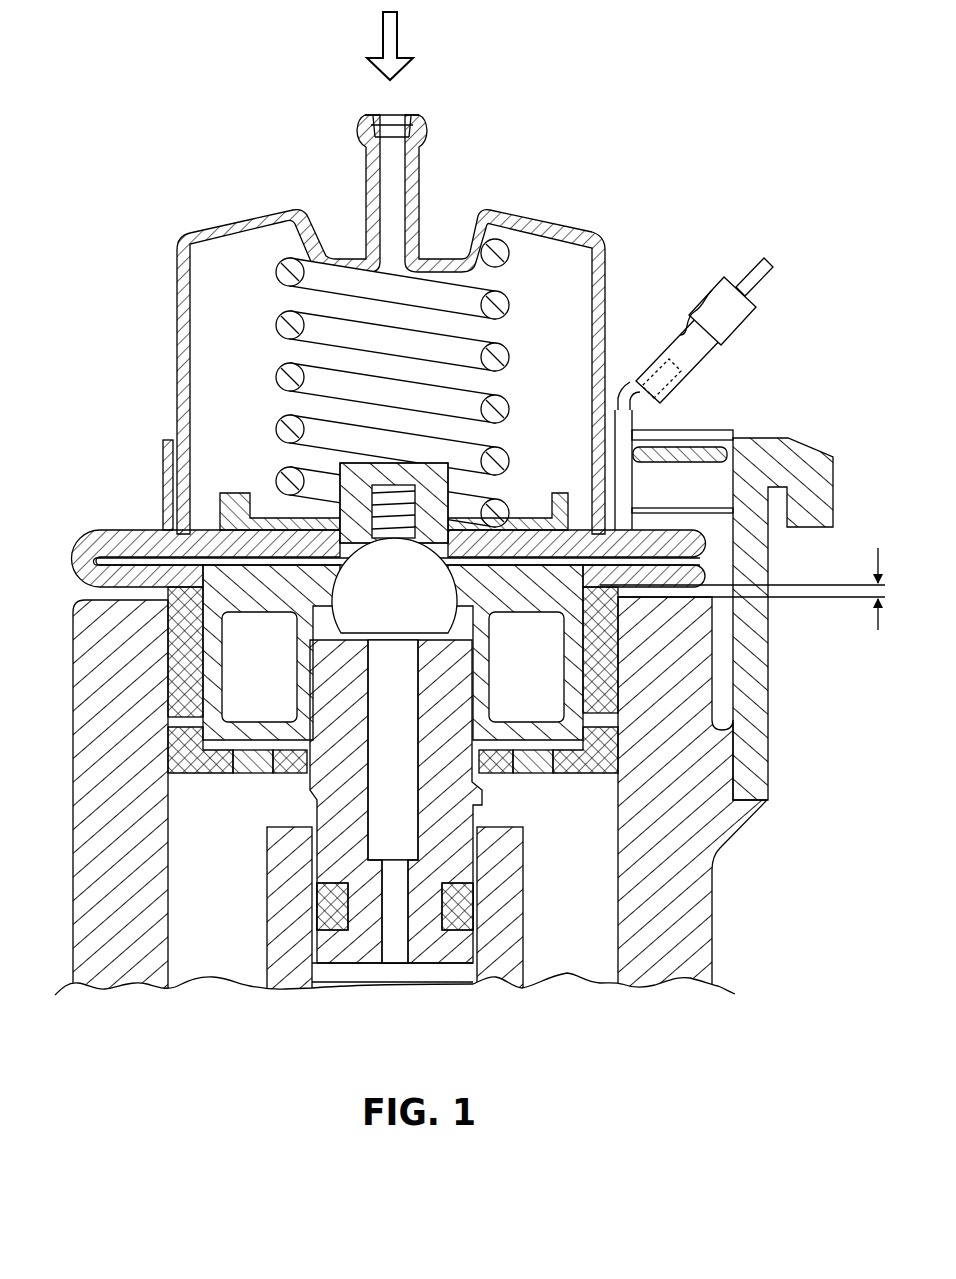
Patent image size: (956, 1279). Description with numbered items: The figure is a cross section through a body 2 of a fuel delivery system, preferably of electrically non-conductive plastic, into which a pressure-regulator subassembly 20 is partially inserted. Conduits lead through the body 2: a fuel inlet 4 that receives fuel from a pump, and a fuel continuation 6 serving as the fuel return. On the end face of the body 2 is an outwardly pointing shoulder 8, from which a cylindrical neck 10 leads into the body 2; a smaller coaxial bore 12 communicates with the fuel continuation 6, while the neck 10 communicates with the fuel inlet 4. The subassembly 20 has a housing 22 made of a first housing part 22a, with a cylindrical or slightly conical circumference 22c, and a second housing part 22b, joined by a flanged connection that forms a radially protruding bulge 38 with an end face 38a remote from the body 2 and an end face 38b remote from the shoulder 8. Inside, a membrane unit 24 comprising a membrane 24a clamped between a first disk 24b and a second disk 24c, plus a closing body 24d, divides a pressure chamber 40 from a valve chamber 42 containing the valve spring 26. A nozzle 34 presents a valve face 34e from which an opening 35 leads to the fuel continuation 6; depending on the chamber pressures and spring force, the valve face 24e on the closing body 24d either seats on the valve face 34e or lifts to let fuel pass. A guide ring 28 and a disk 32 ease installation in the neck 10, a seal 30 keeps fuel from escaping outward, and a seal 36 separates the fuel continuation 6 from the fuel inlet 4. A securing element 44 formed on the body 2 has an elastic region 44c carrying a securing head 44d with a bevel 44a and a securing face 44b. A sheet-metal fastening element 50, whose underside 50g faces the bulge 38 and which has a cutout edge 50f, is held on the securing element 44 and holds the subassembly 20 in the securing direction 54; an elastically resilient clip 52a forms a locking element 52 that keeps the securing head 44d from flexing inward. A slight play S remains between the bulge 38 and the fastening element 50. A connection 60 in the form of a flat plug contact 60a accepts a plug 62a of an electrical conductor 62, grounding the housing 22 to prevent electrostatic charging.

The body 2 is at (708, 915).
The fuel inlet 4 is at (567, 960).
The fuel continuation 6 is at (443, 973).
The shoulder 8 is at (73, 597).
The neck 10 is at (172, 805).
The bore 12 is at (315, 975).
The subassembly 20 is at (630, 213).
The housing 22 is at (617, 280).
The first housing part 22a is at (607, 257).
The second housing part 22b is at (222, 647).
The circumference 22c is at (607, 312).
The membrane unit 24 is at (349, 548).
The membrane 24a is at (130, 528).
The first disk 24b is at (232, 490).
The second disk 24c is at (487, 597).
The closing body 24d is at (295, 640).
The valve face 24e is at (380, 642).
The valve spring 26 is at (278, 316).
The guide ring 28 is at (168, 645).
The seal 30 is at (167, 693).
The disk 32 is at (168, 763).
The nozzle 34 is at (362, 846).
The valve face 34e is at (443, 640).
The opening 35 is at (407, 794).
The seal 36 is at (317, 907).
The bulge 38 is at (103, 527).
The end face 38a is at (137, 530).
The end face 38b is at (120, 593).
The pressure chamber 40 is at (513, 709).
The valve chamber 42 is at (569, 306).
The securing element 44 is at (780, 555).
The bevel 44a is at (787, 450).
The securing face 44b is at (790, 497).
The elastic region 44c is at (760, 680).
The securing head 44d is at (775, 453).
The fastening element 50 is at (716, 418).
The edge 50f is at (770, 530).
The underside 50g is at (740, 600).
The locking element 52 is at (723, 440).
The clip 52a is at (667, 457).
The securing direction 54 is at (392, 37).
The connection 60 is at (695, 310).
The flat plug contact 60a is at (630, 395).
The electrical conductor 62 is at (762, 282).
The plug 62a is at (735, 322).
The play S is at (877, 583).